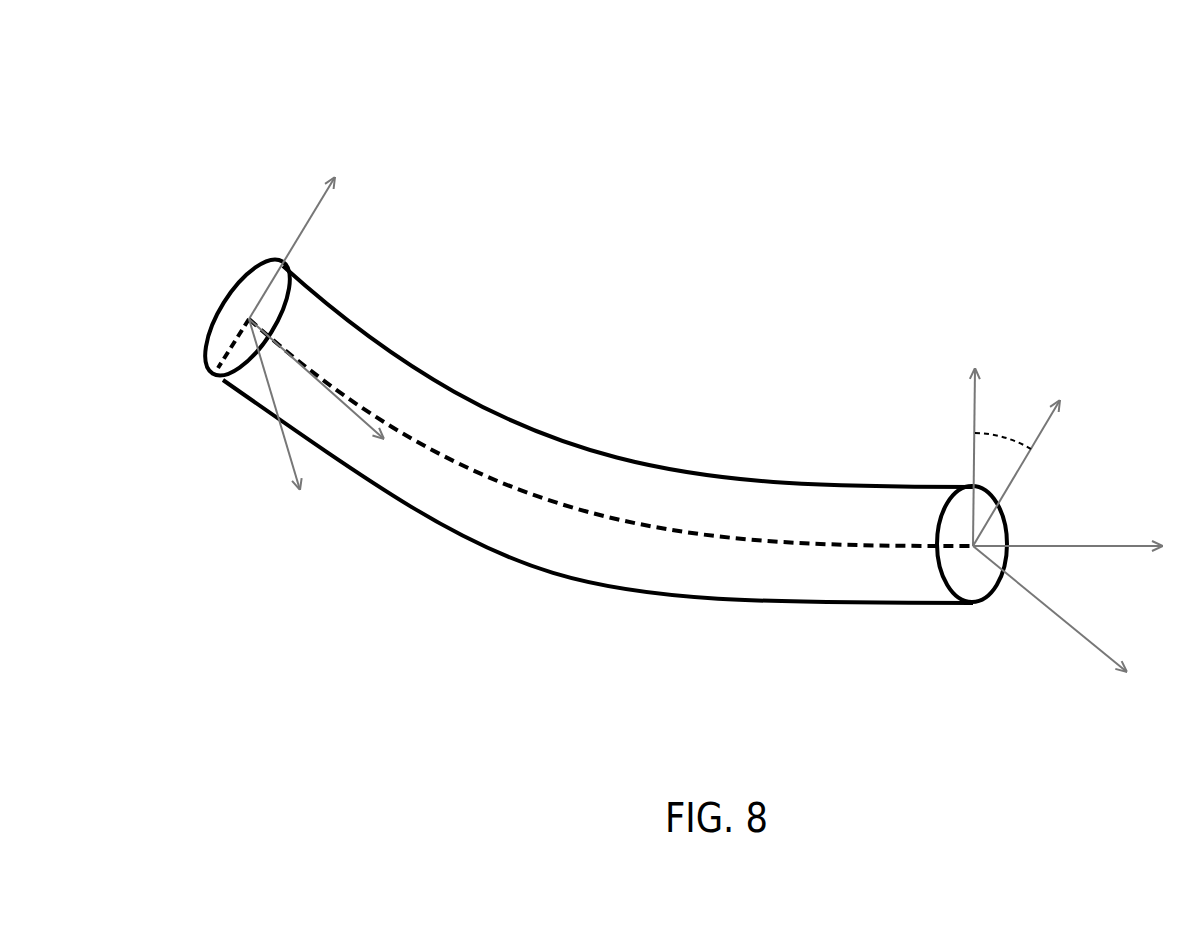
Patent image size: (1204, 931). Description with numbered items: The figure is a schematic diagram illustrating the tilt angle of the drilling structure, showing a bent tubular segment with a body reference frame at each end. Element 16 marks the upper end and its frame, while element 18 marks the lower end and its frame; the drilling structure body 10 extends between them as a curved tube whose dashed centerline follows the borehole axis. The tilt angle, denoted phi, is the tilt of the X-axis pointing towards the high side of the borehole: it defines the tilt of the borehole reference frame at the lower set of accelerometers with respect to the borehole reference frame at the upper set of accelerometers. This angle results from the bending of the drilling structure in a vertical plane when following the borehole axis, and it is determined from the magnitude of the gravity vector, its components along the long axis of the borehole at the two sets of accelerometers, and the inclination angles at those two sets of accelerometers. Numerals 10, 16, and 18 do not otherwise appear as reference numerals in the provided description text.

The flexible elongated member 10 is at (595, 434).
The first sensor body frame (proximal end of flexible member) 16 is at (230, 232).
The second sensor body frame (distal end of flexible member) 18 is at (1022, 267).